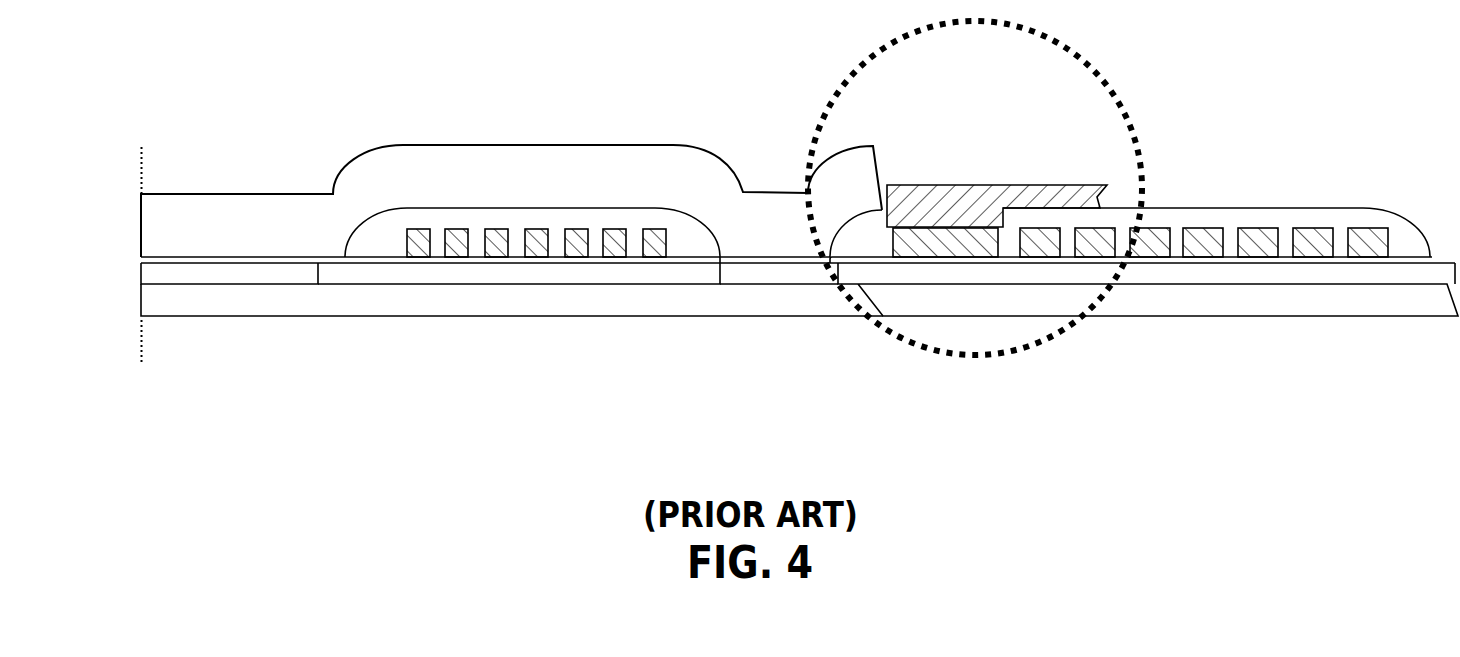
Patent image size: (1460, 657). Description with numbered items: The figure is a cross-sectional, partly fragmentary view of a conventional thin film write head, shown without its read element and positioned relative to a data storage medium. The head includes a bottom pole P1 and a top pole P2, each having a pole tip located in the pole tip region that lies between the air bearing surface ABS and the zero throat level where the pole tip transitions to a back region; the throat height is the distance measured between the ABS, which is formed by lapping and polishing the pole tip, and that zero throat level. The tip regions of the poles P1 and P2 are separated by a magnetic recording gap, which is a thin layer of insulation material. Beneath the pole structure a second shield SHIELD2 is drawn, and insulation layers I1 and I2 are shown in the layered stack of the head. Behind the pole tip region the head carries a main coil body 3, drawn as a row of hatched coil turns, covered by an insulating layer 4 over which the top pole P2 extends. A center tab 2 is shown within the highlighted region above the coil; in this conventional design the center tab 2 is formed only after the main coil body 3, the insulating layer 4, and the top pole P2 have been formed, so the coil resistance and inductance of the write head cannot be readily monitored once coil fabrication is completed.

The top pole P2 is at (293, 193).
The bottom pole P1 is at (224, 280).
The shield 2 SHIELD2 is at (519, 305).
The air bearing surface ABS is at (146, 234).
The first insulation layer I1 is at (612, 277).
The second insulation layer I2 is at (1212, 321).
The center tab 2 is at (958, 185).
The main coil body 3 is at (1203, 230).
The insulating layer 4 is at (1298, 217).